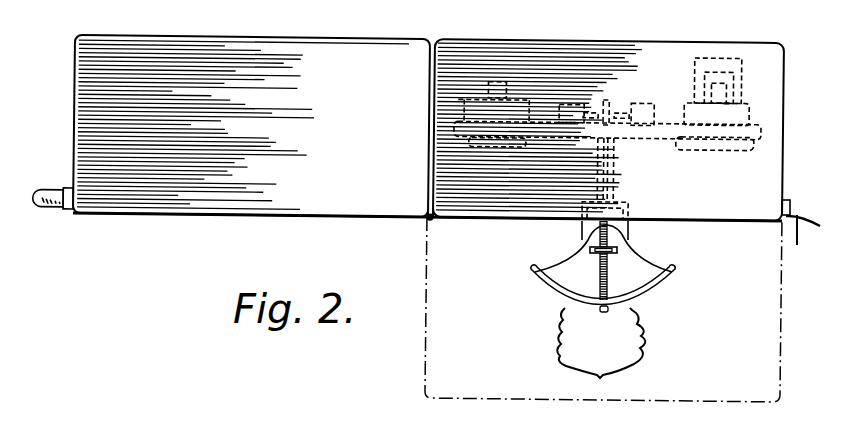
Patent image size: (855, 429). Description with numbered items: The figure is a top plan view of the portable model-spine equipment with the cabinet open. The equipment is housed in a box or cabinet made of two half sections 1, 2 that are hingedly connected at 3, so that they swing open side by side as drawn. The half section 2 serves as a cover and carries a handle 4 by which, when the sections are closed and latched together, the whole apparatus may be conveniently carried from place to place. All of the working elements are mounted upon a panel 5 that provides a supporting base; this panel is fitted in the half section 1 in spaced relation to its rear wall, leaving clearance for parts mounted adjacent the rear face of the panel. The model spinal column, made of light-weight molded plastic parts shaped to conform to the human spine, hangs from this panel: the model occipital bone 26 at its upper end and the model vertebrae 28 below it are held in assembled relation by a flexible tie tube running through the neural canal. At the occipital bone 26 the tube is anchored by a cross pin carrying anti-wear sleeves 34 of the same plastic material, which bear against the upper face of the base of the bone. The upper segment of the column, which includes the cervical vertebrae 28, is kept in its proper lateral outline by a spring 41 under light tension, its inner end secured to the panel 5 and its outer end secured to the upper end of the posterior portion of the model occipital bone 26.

The half section 1 is at (496, 211).
The half section 2 is at (238, 217).
The hinge connection 3 is at (428, 221).
The handle 4 is at (49, 209).
The panel 5 is at (700, 133).
The model occipital bone 26 is at (672, 280).
The model vertebrae 28 is at (652, 340).
The anti-wear sleeves 34 is at (617, 250).
The spring 41 is at (600, 263).